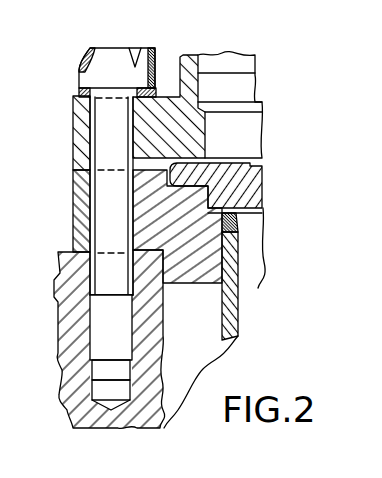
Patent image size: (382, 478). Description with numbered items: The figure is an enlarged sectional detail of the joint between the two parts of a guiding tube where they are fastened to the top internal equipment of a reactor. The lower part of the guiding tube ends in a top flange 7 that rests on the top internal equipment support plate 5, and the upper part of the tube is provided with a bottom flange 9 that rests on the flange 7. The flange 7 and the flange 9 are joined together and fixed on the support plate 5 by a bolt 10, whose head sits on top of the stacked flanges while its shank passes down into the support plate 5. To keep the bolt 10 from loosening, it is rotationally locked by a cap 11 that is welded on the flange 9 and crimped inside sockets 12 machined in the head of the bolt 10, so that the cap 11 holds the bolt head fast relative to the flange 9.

The top internal equipment support plate 5 is at (70, 373).
The top flange 7 is at (190, 245).
The bottom flange 9 is at (168, 118).
The bolt 10 is at (108, 223).
The cap 11 is at (83, 71).
The sockets 12 is at (135, 56).